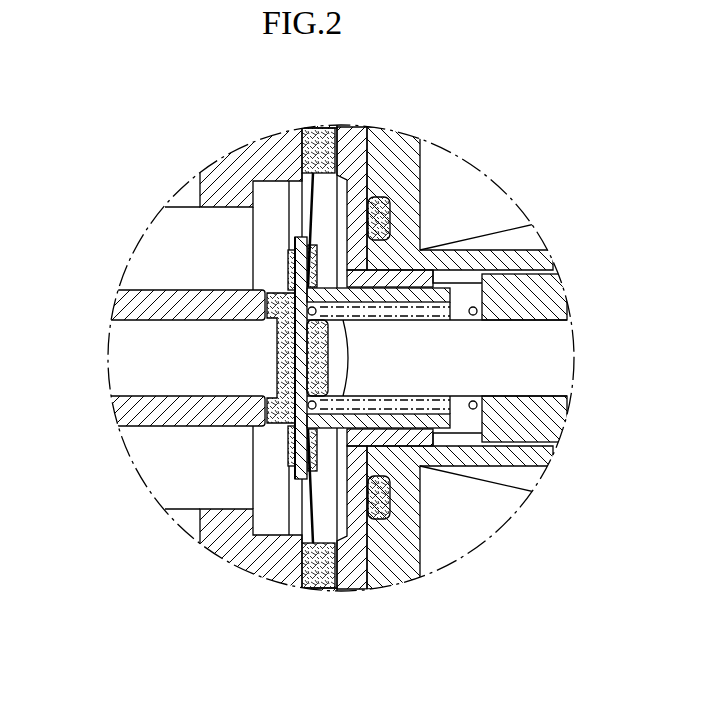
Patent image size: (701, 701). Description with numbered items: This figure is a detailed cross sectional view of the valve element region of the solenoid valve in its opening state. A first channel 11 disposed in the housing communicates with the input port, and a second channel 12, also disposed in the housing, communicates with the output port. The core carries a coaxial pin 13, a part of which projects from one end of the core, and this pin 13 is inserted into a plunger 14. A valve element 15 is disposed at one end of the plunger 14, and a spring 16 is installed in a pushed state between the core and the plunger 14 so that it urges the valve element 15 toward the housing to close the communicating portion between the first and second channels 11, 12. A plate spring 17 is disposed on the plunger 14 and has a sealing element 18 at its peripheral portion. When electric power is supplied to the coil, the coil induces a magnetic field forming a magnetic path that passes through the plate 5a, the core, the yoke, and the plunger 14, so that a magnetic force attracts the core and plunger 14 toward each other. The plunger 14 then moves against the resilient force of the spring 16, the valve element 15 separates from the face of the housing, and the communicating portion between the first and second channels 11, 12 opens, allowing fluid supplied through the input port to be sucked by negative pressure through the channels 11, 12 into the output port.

The plate 5a is at (355, 127).
The first channel 11 is at (167, 258).
The second channel 12 is at (147, 370).
The pin 13 is at (433, 360).
The plunger 14 is at (454, 278).
The valve element 15 is at (284, 287).
The spring 16 is at (462, 404).
The plate spring 17 is at (303, 495).
The sealing element 18 is at (318, 580).